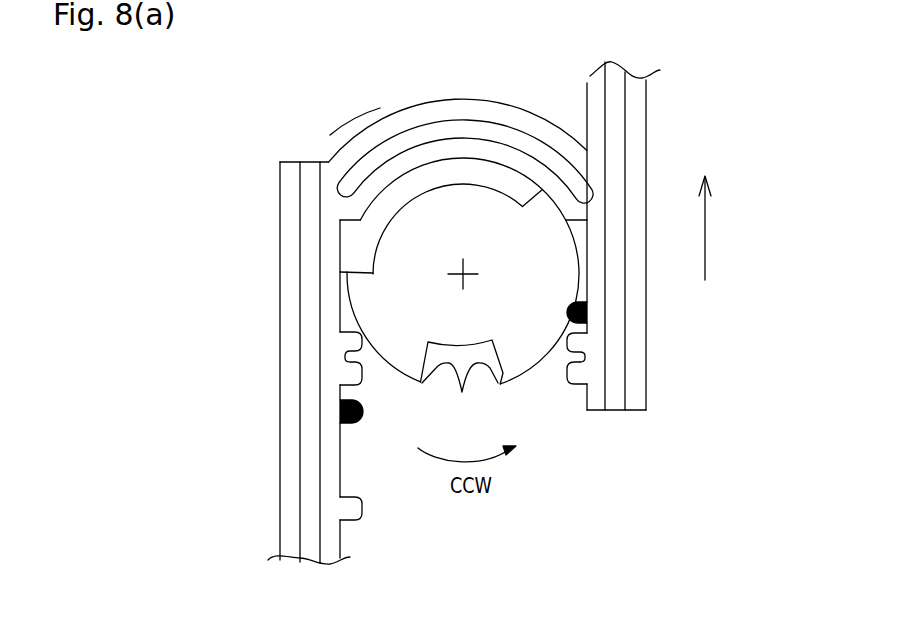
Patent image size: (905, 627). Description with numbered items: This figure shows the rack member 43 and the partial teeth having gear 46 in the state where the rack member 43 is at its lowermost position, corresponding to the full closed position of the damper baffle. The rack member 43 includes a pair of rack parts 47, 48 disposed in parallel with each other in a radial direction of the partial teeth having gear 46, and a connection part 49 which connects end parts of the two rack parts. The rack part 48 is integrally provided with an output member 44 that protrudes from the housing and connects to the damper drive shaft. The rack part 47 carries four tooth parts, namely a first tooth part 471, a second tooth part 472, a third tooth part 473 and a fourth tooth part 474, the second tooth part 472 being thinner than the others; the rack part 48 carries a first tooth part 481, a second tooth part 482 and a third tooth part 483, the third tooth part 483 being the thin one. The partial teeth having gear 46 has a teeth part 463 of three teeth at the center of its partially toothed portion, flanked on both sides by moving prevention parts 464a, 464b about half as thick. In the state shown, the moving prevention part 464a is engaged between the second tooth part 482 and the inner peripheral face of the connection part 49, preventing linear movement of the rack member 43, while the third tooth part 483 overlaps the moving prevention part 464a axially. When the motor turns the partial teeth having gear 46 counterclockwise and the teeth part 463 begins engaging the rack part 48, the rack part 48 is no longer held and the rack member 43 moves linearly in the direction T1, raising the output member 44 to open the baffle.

The rack member 43 is at (279, 160).
The output member 44 is at (637, 125).
The partial teeth having gear 46 is at (480, 254).
The rack part 47 is at (280, 413).
The rack part 48 is at (658, 347).
The connection part 49 is at (363, 140).
The teeth part 463 is at (465, 392).
The moving prevention part 464a is at (545, 232).
The moving prevention part 464b is at (370, 290).
The first tooth part 471 is at (342, 510).
The second tooth part 472 is at (338, 420).
The third tooth part 473 is at (340, 406).
The fourth tooth part 474 is at (345, 343).
The first tooth part 481 is at (582, 373).
The second tooth part 482 is at (580, 345).
The third tooth part 483 is at (587, 310).
The linear moving direction T1 is at (705, 231).